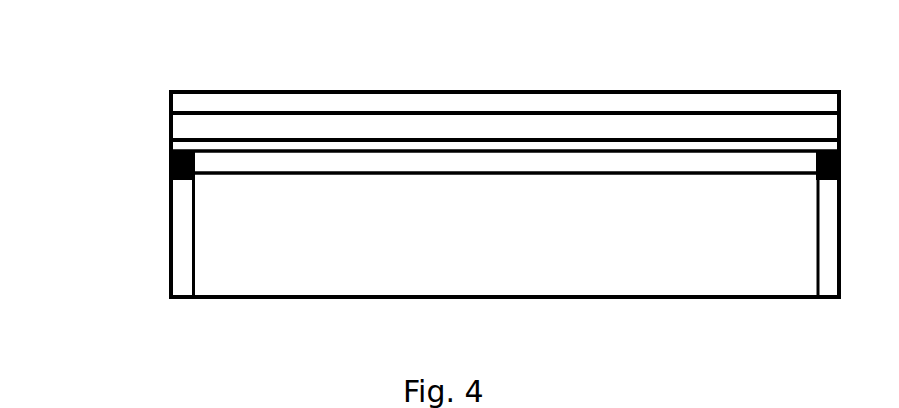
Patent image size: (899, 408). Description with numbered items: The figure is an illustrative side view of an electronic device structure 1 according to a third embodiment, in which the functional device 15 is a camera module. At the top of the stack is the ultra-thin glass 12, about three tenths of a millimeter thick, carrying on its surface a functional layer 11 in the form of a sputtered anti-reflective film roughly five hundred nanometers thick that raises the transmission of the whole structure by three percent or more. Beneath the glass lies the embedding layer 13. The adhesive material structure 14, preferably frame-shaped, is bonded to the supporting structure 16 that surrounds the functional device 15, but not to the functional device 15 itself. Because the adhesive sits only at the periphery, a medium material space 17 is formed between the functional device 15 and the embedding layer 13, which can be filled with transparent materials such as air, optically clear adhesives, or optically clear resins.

The electronic device structure 1 is at (436, 191).
The functional layer 11 is at (187, 105).
The ultra-thin glass 12 is at (192, 127).
The embedding layer 13 is at (188, 148).
The adhesive material structure 14 is at (170, 167).
The functional device 15 is at (465, 246).
The supporting structure 16 is at (183, 259).
The medium material space 17 is at (578, 163).